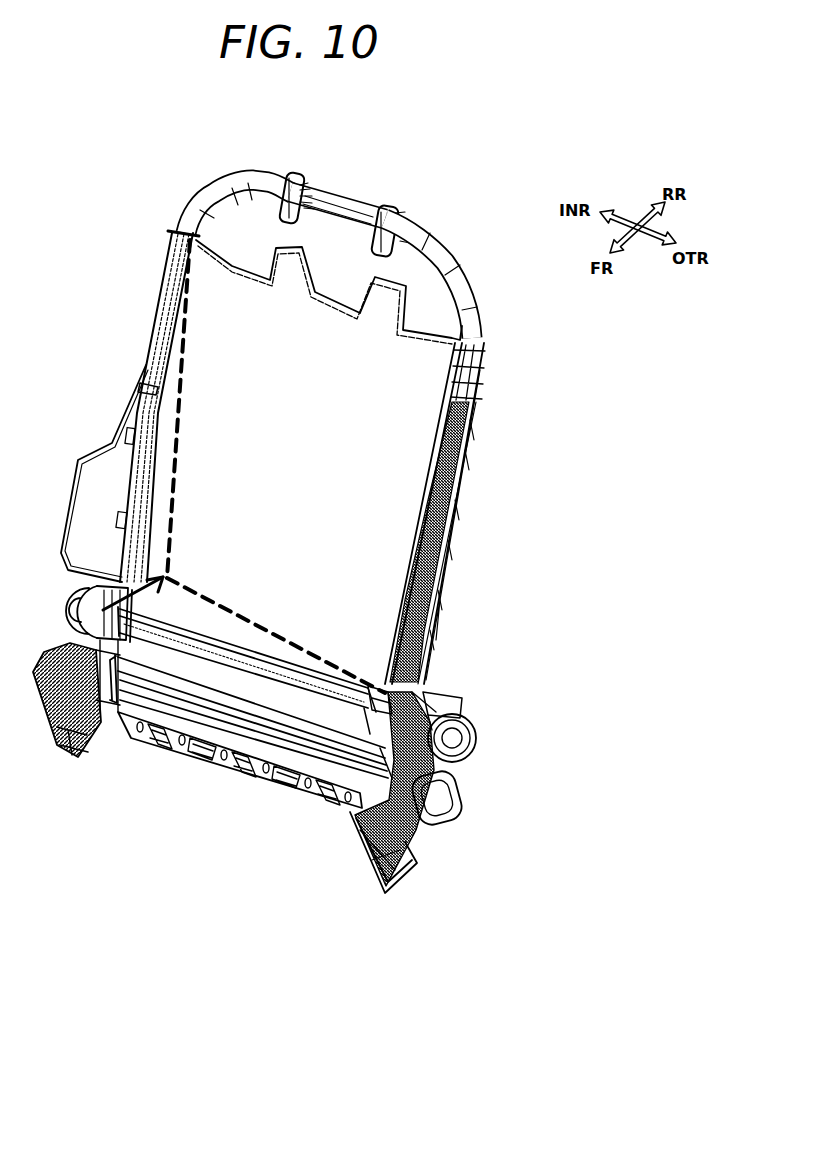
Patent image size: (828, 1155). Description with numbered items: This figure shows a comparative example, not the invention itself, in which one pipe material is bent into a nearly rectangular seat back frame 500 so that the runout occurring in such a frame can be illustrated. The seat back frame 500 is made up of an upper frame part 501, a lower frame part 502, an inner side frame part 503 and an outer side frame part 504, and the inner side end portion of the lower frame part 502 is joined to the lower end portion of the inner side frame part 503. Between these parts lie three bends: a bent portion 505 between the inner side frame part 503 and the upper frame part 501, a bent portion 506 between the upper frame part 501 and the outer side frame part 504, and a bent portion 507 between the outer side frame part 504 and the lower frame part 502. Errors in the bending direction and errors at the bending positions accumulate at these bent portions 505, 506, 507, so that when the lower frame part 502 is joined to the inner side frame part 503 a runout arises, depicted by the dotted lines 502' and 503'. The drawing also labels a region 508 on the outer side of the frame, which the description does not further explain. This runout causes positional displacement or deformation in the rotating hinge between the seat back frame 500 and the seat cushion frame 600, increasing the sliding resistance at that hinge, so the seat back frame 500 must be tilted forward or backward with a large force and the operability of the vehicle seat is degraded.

The seat back frame 500 is at (466, 206).
The upper frame part 501 is at (343, 202).
The lower frame part 502 is at (251, 687).
The dotted line depicting runout of lower frame part 502' is at (276, 610).
The inner side frame part 503 is at (113, 495).
The dotted line depicting runout of inner side frame part 503' is at (185, 425).
The outer side frame part 504 is at (437, 440).
The bent portion 505 is at (217, 197).
The bent portion 506 is at (467, 273).
The bent portion 507 is at (377, 707).
The outer side frame side wall 508 is at (443, 562).
The seat cushion frame 600 is at (401, 878).